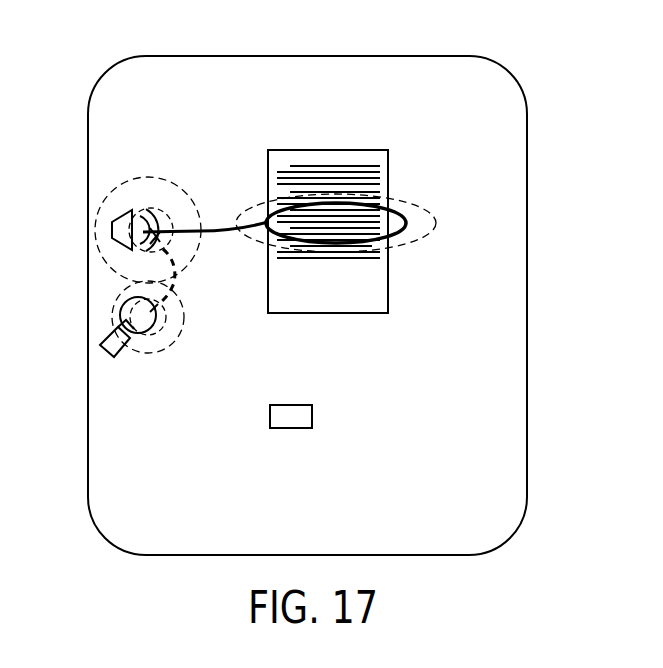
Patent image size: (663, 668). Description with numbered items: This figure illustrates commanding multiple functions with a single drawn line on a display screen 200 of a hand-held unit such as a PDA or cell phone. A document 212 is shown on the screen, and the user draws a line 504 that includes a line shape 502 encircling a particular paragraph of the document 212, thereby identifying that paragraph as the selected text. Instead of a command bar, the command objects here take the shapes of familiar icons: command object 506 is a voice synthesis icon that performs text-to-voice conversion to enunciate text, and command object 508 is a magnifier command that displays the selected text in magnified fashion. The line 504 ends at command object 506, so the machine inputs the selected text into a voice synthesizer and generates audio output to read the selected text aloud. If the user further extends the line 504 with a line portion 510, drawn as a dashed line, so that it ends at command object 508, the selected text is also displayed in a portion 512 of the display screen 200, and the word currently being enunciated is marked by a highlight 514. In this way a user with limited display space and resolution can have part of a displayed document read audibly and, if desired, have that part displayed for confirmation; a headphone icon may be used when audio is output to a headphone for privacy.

The display screen 200 is at (68, 66).
The document 212 is at (328, 150).
The line shape 502 is at (402, 231).
The line 504 is at (219, 231).
The command object 506 is at (112, 229).
The command object 508 is at (100, 346).
The line portion 510 is at (177, 286).
The portion of display screen 512 is at (488, 384).
The highlight 514 is at (302, 396).